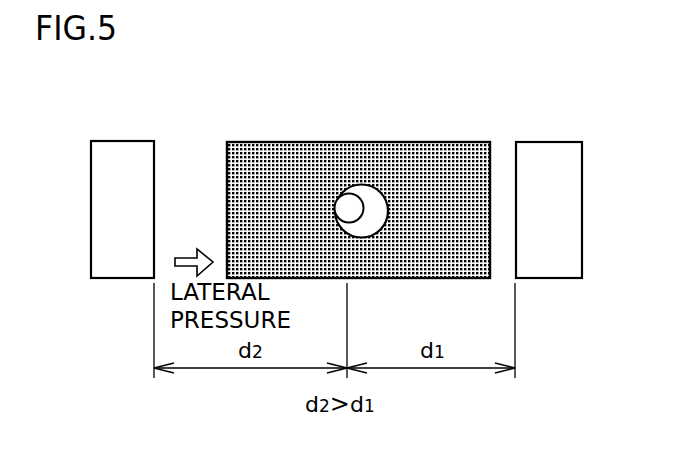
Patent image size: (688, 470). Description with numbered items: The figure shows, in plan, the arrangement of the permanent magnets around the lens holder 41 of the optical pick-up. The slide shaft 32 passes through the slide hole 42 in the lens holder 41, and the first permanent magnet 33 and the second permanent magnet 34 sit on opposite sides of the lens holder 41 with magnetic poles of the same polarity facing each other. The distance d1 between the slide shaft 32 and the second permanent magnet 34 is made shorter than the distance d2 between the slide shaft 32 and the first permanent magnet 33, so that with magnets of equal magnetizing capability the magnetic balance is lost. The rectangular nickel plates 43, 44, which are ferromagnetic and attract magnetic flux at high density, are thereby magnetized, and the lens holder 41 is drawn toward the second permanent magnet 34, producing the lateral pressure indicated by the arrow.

The slide shaft 32 is at (343, 208).
The first permanent magnet 33 is at (124, 160).
The second permanent magnet 34 is at (549, 160).
The lens holder 41 is at (353, 185).
The slide hole 42 is at (363, 190).
The nickel plate 43 is at (353, 185).
The nickel plate 44 is at (254, 160).